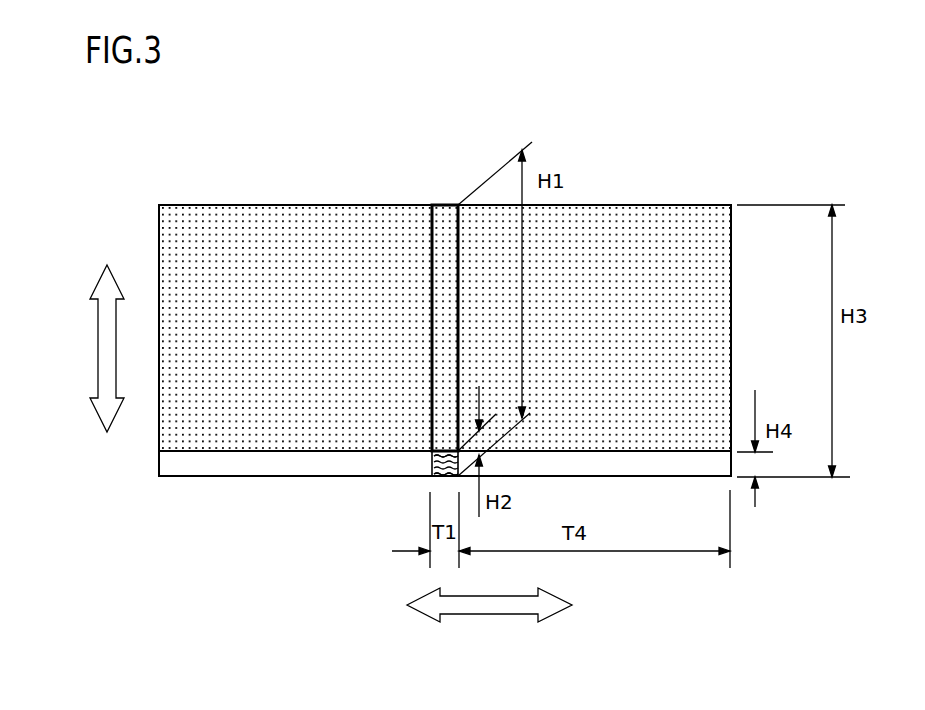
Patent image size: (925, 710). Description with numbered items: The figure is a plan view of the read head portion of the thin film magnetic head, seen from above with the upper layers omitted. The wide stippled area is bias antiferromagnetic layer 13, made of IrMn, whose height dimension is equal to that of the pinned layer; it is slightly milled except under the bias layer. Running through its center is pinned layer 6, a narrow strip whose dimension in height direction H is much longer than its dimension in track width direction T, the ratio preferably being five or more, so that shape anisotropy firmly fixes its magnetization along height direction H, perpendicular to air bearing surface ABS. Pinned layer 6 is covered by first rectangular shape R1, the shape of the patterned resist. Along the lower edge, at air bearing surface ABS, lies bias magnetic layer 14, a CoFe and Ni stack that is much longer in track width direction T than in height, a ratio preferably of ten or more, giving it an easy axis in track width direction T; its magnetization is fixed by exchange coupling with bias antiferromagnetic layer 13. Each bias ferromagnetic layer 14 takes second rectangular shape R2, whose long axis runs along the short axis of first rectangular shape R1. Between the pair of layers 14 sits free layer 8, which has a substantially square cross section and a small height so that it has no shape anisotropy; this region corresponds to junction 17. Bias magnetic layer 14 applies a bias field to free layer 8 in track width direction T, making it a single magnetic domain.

The bias antiferromagnetic layer 13 is at (263, 225).
The pinned layer 6 is at (443, 213).
The bias magnetic layer 14 is at (183, 462).
The free layer 8 is at (428, 473).
The junction 17 is at (394, 502).
The first rectangular shape R1 is at (432, 283).
The second rectangular shape R2 is at (288, 477).
The air bearing surface ABS is at (255, 476).
The height direction H is at (98, 359).
The track width direction T is at (485, 614).